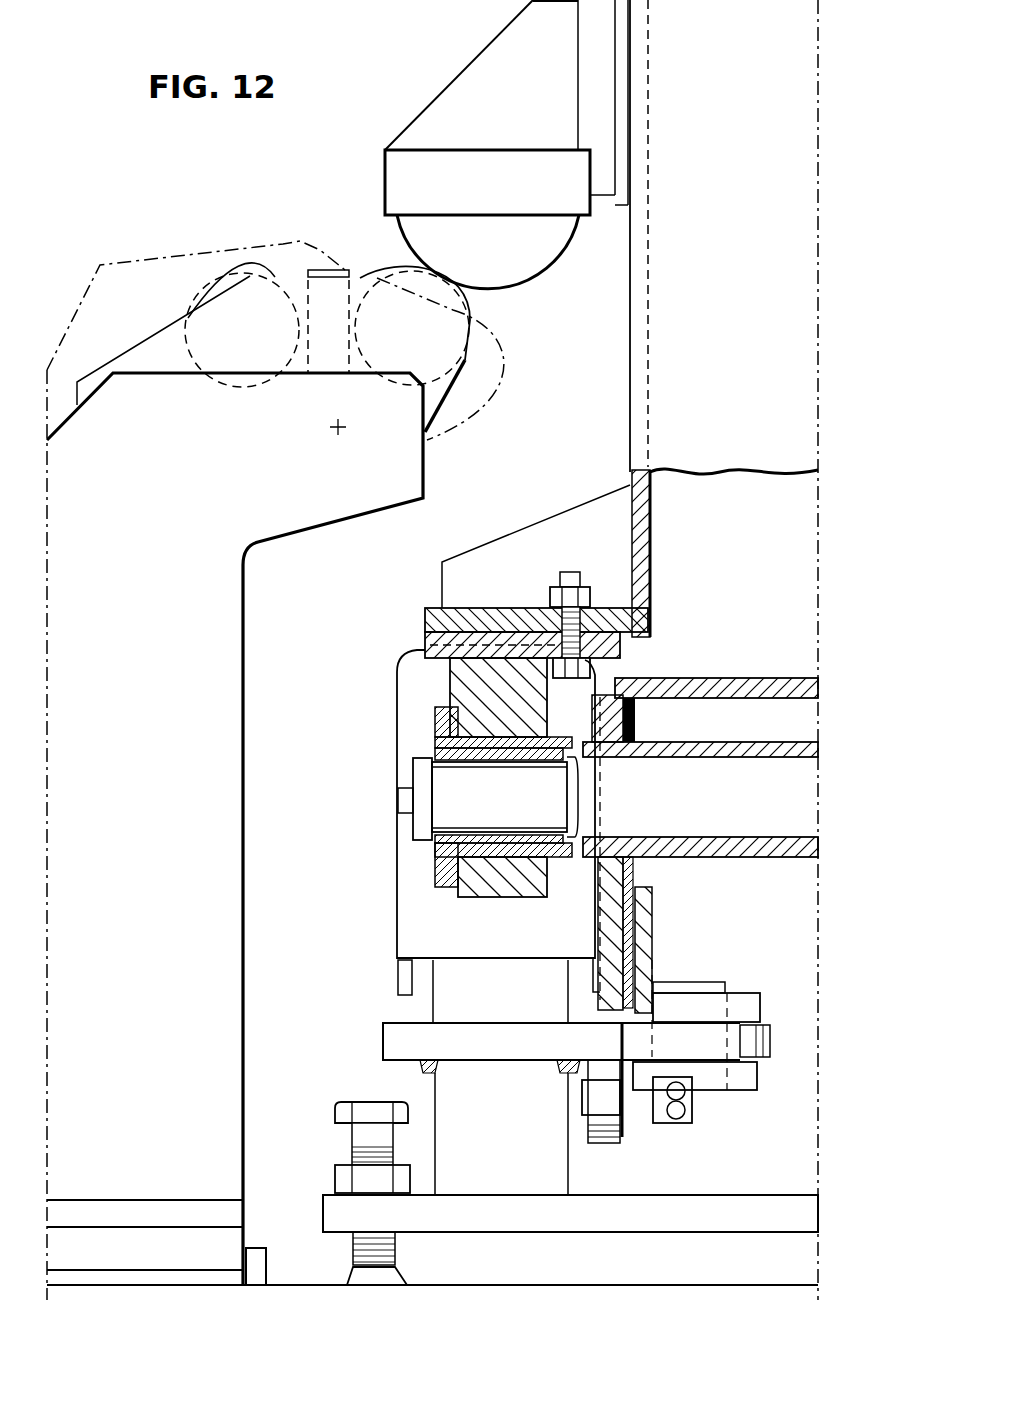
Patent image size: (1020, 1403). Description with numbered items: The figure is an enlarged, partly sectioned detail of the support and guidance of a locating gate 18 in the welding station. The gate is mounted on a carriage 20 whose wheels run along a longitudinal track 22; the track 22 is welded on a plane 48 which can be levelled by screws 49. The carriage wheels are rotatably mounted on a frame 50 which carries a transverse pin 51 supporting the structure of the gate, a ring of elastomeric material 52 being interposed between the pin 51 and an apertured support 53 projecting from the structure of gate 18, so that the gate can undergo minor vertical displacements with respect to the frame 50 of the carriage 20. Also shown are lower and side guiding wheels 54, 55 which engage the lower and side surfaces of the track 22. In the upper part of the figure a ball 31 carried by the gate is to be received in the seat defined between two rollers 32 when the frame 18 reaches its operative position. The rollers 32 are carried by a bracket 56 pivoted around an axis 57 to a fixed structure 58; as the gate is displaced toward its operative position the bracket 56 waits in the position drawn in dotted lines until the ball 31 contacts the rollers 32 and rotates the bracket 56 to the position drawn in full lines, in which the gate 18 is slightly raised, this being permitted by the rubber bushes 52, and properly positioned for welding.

The locating gate 18 is at (637, 322).
The carriage 20 is at (735, 895).
The longitudinal track 22 is at (392, 1040).
The ball 31 is at (540, 258).
The rollers 32 is at (231, 273).
The plane 48 is at (757, 1200).
The levelling screws 49 is at (353, 1255).
The frame 50 is at (730, 678).
The transverse pin 51 is at (452, 782).
The ring of elastomeric material 52 is at (506, 757).
The apertured support 53 is at (467, 680).
The lower guiding wheel 54 is at (633, 1140).
The side guiding wheel 55 is at (770, 1040).
The bracket 56 is at (112, 262).
The pivot axis 57 is at (330, 427).
The fixed structure 58 is at (223, 735).